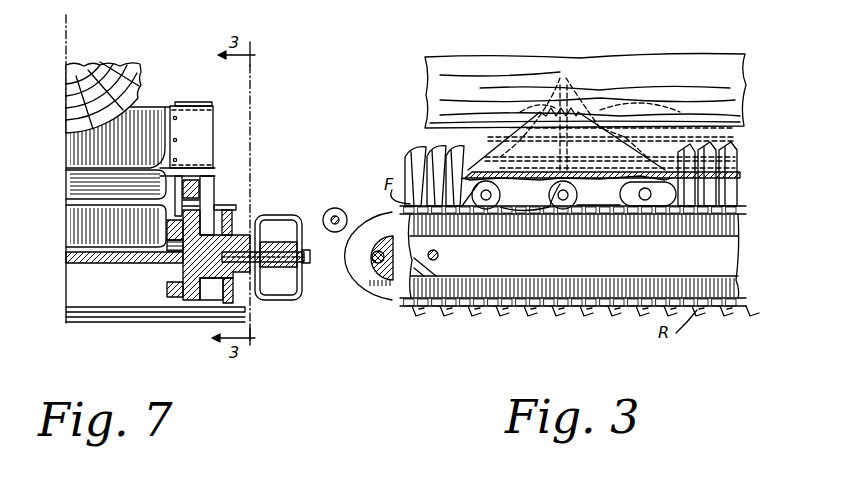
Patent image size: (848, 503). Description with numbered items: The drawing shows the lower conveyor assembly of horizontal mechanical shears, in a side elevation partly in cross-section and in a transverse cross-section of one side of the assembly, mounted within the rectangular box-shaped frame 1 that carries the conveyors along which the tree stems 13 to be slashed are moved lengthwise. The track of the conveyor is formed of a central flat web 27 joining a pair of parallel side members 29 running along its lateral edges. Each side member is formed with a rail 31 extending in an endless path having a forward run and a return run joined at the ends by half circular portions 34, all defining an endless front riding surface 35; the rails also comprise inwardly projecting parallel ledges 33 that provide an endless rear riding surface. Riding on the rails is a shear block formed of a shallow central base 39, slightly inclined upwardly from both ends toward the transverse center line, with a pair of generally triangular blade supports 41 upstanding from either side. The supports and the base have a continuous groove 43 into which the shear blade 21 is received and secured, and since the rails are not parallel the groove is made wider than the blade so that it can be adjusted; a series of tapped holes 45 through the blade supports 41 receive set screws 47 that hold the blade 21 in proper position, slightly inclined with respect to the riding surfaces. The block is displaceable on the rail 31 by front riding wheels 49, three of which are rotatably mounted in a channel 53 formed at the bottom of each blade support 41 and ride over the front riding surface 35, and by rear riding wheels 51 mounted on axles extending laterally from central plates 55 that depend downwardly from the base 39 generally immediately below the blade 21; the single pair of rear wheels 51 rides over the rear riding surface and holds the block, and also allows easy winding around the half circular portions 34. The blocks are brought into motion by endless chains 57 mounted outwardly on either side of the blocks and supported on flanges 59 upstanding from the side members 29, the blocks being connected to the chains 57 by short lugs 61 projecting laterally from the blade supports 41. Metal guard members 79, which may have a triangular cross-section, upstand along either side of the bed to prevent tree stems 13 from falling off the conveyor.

In FIG. 7, the frame 1 is at (300, 216).
In FIG. 7, the stems 13 is at (118, 70).
In FIG. 3, the stems 13 is at (708, 60).
In FIG. 7, the shear blade 21 is at (92, 148).
In FIG. 7, the central flat web 27 is at (80, 263).
In FIG. 7, the side members 29 is at (212, 265).
In FIG. 3, the side members 29 is at (603, 262).
In FIG. 7, the rail 31 is at (190, 307).
In FIG. 7, the ledges 33 is at (172, 225).
In FIG. 3, the half circular portions 34 is at (372, 220).
In FIG. 7, the front riding surface 35 is at (200, 300).
In FIG. 7, the central base 39 is at (95, 181).
In FIG. 7, the blade supports 41 is at (205, 115).
In FIG. 3, the blade supports 41 is at (662, 170).
In FIG. 3, the groove 43 is at (603, 135).
In FIG. 3, the tapped holes 45 is at (672, 112).
In FIG. 3, the set screws 47 is at (650, 150).
In FIG. 7, the front riding wheels 49 is at (193, 192).
In FIG. 3, the front riding wheels 49 is at (645, 201).
In FIG. 7, the rear riding wheels 51 is at (176, 252).
In FIG. 7, the channels 53 is at (206, 170).
In FIG. 7, the central plates 55 is at (96, 223).
In FIG. 3, the endless chains 57 is at (735, 212).
In FIG. 7, the flanges 59 is at (232, 224).
In FIG. 7, the lugs 61 is at (235, 192).
In FIG. 3, the guard members 79 is at (450, 146).